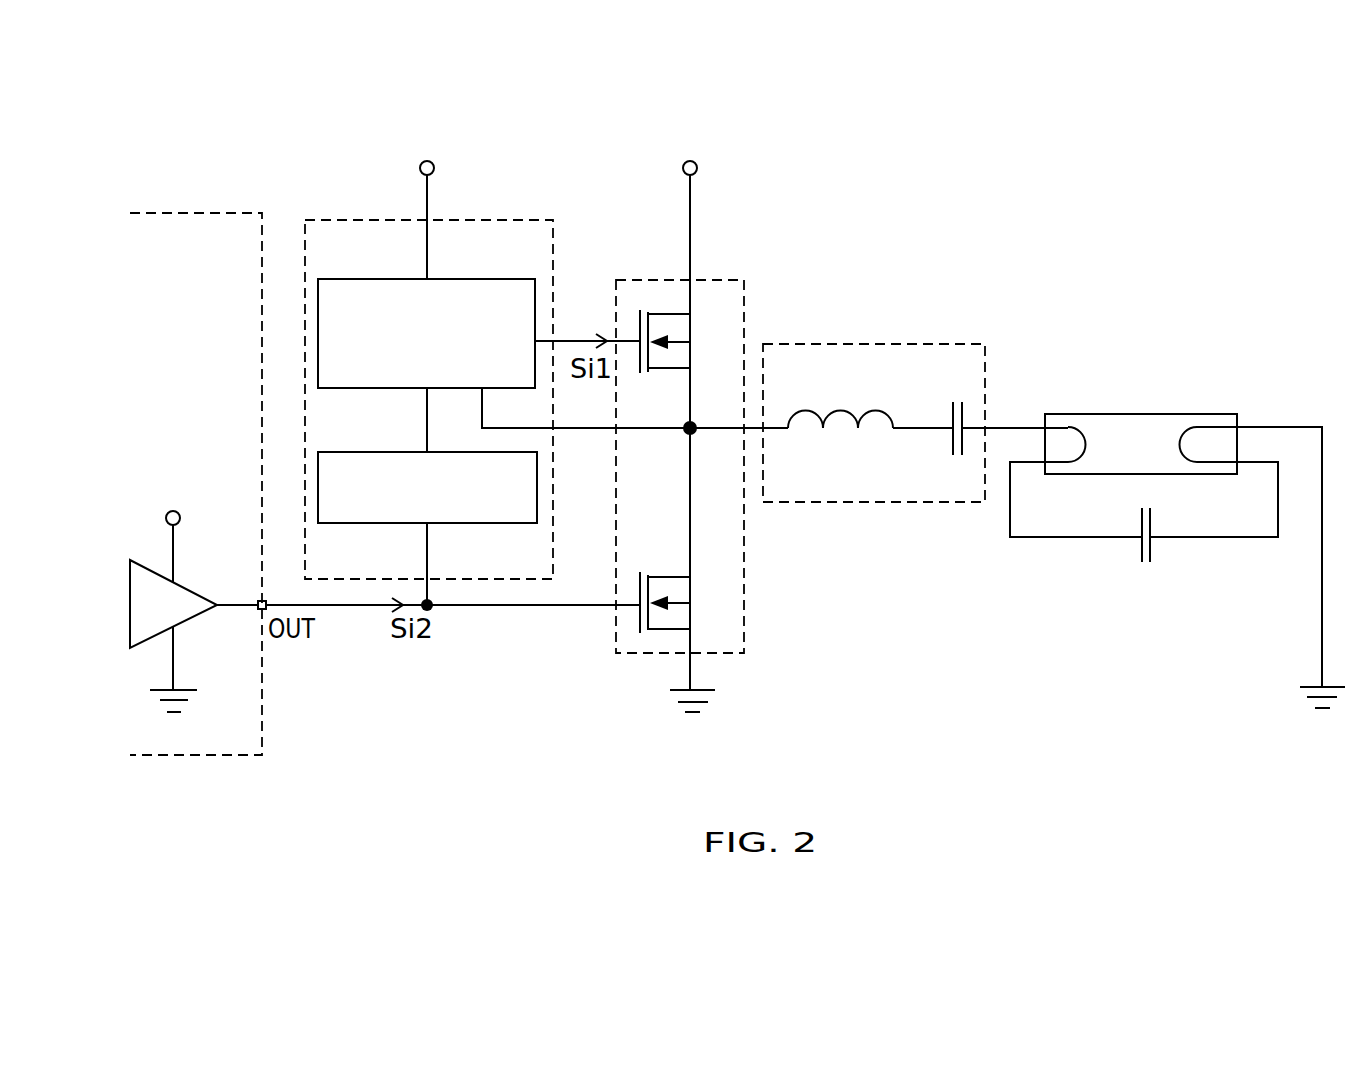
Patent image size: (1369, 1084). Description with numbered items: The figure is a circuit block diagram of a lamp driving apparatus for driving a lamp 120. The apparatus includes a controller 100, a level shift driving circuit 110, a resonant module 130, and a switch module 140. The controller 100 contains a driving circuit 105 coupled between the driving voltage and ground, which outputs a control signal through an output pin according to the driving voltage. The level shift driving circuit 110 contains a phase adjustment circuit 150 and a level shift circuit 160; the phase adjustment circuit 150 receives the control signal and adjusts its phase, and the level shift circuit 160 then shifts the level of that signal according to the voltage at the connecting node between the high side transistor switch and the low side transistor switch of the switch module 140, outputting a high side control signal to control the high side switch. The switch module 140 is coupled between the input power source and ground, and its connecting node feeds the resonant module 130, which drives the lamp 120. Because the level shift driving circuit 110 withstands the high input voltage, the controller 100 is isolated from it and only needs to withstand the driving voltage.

The controller 100 is at (110, 690).
The driving circuit 105 is at (130, 605).
The level shift driving circuit 110 is at (490, 220).
The lamp 120 is at (1114, 378).
The resonant module 130 is at (913, 336).
The switch module 140 is at (736, 268).
The phase adjustment circuit 150 is at (458, 523).
The level shift circuit 160 is at (450, 279).